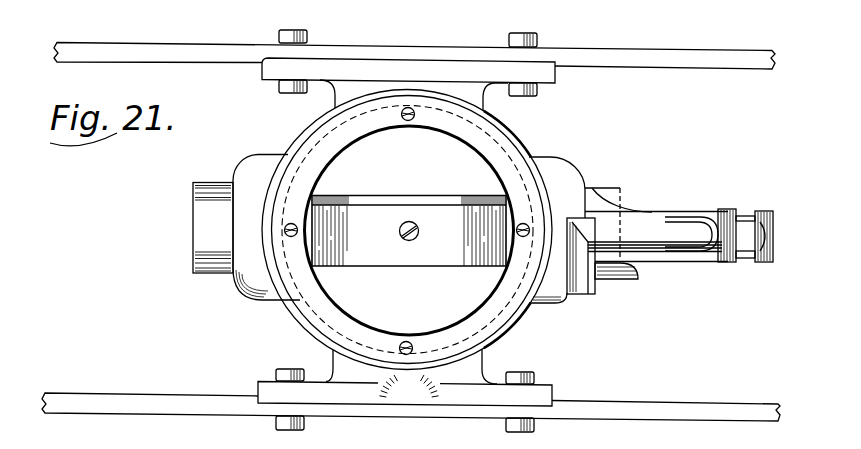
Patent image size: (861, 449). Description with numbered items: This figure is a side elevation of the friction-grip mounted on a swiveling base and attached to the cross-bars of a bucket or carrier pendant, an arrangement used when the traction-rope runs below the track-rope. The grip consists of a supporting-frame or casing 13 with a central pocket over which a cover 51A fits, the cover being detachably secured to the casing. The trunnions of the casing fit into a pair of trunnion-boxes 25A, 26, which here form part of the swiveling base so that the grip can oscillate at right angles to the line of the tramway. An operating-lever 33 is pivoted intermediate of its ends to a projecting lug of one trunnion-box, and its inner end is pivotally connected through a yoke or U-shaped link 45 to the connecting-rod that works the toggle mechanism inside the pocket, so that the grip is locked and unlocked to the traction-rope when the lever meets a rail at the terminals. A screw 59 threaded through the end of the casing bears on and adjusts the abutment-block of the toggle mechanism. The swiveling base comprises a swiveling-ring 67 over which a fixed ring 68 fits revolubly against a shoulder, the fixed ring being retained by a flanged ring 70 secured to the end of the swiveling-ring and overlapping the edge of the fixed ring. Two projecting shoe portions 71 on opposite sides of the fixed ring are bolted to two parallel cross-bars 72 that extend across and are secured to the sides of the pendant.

The cross-bars 72 is at (135, 52).
The shoe portions 71 is at (383, 77).
The flanged ring 70 is at (333, 128).
The fixed ring 68 is at (291, 315).
The swiveling-ring 67 is at (409, 230).
The supporting-frame 13 is at (399, 267).
The cover 51A is at (412, 182).
The screw 59 is at (398, 229).
The trunnion-box 25A is at (207, 221).
The trunnion-box 26 is at (595, 187).
The operating-lever 33 is at (635, 233).
The link 45 is at (750, 212).